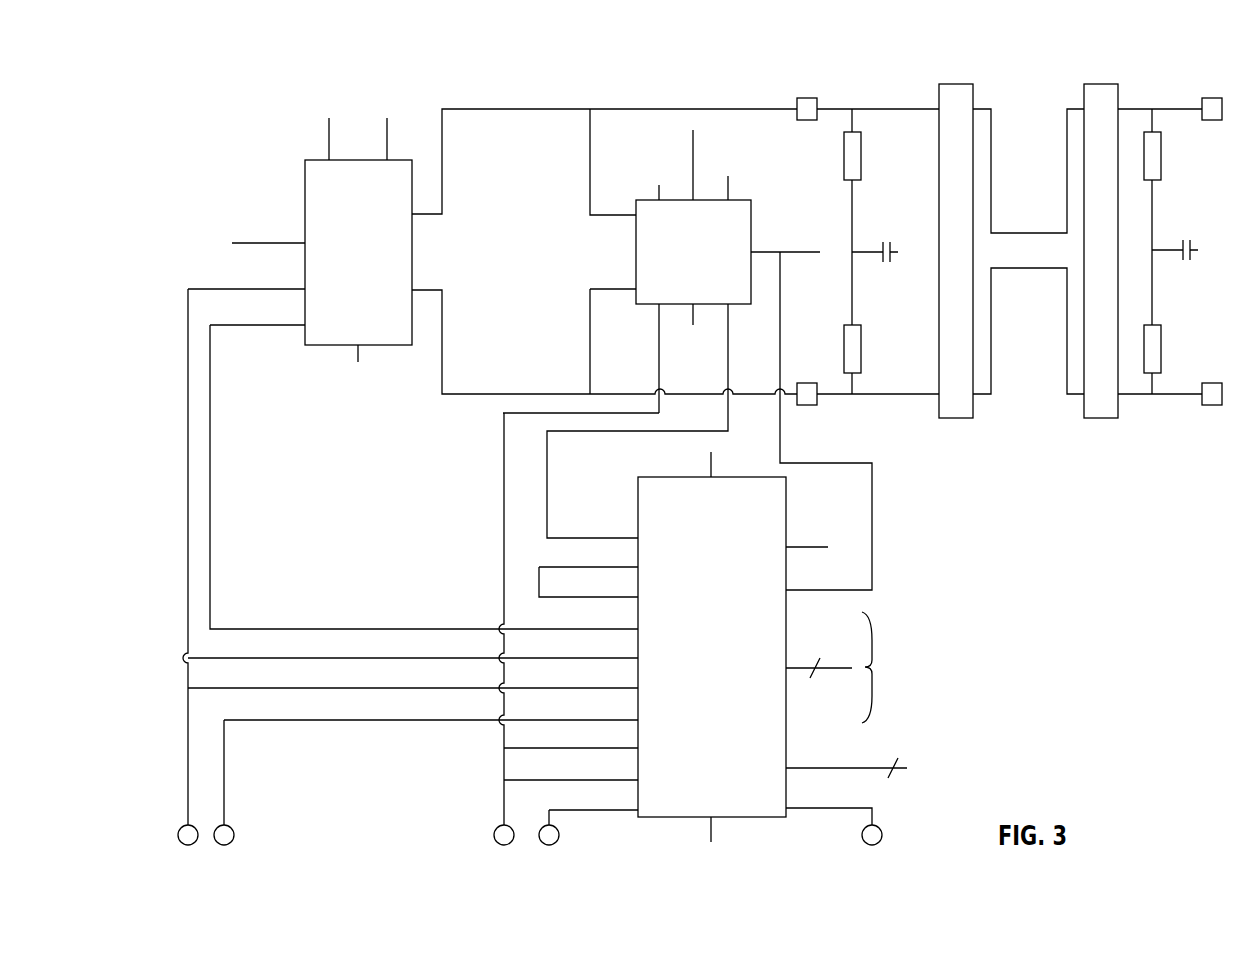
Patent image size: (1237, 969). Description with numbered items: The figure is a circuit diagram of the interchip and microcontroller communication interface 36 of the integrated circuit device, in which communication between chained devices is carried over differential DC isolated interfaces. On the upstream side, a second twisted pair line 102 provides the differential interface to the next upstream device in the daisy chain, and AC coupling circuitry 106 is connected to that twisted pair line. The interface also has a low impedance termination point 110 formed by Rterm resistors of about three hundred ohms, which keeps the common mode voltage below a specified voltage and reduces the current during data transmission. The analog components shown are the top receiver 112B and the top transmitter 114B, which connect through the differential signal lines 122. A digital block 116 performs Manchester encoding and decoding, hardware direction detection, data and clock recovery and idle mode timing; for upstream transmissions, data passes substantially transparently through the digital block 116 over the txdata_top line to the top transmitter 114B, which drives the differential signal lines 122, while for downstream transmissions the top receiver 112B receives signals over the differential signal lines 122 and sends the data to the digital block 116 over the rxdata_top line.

The interchip and microcontroller communication interface 36 is at (244, 106).
The top transmitter 114B is at (306, 243).
The top receiver 112B is at (687, 357).
The digital block 116 is at (565, 569).
The differential signal lines 122 is at (521, 118).
The low impedance termination point 110 is at (852, 398).
The AC coupling circuitry 106 is at (958, 418).
The second twisted pair line 102 is at (1026, 382).